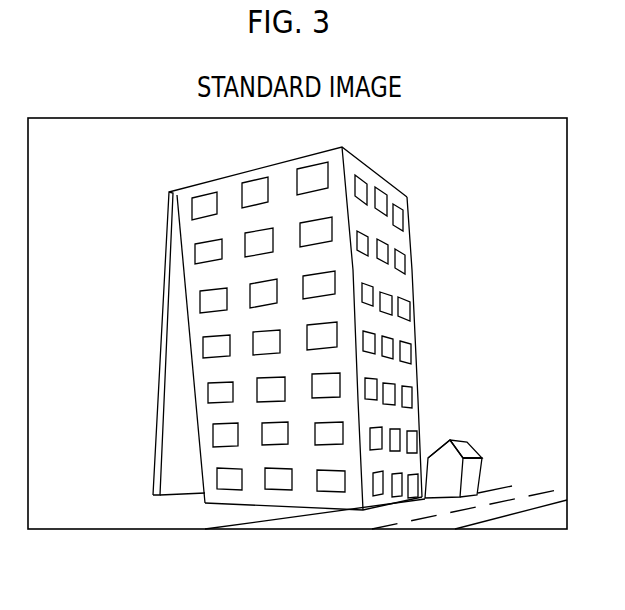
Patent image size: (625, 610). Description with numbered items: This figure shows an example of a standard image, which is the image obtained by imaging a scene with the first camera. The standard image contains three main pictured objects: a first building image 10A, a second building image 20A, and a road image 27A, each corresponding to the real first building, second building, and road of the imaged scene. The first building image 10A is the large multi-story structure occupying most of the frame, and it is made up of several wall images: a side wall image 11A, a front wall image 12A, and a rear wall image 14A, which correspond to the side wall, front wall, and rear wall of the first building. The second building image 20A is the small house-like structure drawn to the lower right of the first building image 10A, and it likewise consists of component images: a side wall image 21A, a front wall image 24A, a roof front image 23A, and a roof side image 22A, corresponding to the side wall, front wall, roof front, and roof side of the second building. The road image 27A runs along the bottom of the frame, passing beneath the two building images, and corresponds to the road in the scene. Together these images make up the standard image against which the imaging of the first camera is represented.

The first building image 10A is at (409, 178).
The side wall image 11A is at (223, 480).
The front wall image 12A is at (398, 245).
The rear wall image 14A is at (156, 388).
The second building image 20A is at (481, 410).
The side wall image 21A is at (448, 478).
The roof side image 22A is at (447, 441).
The roof front image 23A is at (478, 448).
The front wall image 24A is at (472, 483).
The road image 27A is at (410, 524).